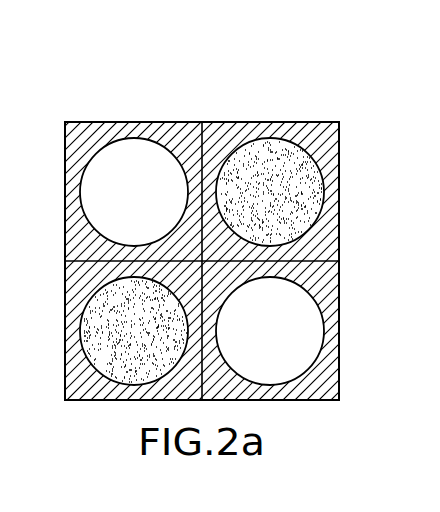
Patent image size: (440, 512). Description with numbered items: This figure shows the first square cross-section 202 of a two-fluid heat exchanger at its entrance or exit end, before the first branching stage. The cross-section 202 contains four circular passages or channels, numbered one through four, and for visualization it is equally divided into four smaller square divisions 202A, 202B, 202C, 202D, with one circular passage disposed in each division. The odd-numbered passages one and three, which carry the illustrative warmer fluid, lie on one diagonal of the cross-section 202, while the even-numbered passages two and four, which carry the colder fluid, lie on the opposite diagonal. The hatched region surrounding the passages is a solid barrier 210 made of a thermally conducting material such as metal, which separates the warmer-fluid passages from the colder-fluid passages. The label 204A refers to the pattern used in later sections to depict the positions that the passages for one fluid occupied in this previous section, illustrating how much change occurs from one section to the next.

The first square cross-section 202 is at (283, 111).
The square division 202A is at (88, 135).
The square division 202B is at (78, 375).
The square division 202C is at (324, 145).
The square division 202D is at (335, 373).
The solid barrier 210 is at (78, 243).
The pattern of previous passage positions 204A is at (439, 221).